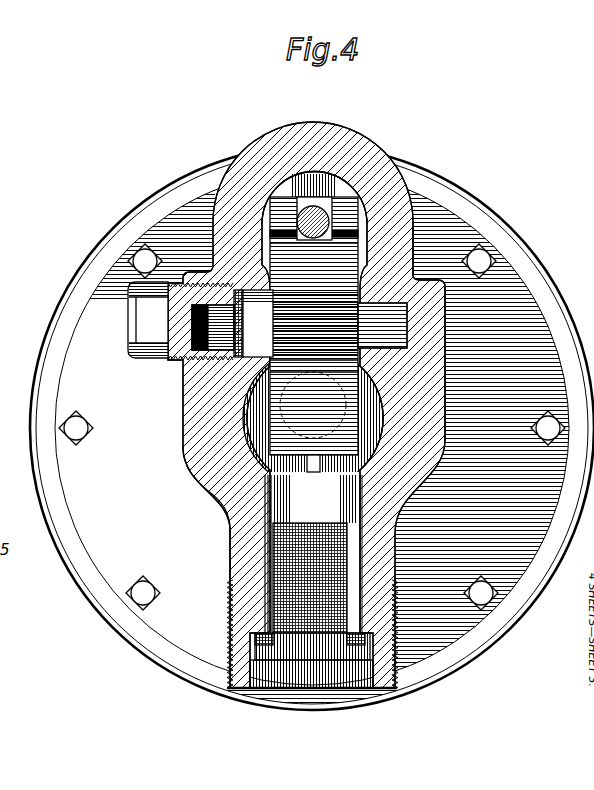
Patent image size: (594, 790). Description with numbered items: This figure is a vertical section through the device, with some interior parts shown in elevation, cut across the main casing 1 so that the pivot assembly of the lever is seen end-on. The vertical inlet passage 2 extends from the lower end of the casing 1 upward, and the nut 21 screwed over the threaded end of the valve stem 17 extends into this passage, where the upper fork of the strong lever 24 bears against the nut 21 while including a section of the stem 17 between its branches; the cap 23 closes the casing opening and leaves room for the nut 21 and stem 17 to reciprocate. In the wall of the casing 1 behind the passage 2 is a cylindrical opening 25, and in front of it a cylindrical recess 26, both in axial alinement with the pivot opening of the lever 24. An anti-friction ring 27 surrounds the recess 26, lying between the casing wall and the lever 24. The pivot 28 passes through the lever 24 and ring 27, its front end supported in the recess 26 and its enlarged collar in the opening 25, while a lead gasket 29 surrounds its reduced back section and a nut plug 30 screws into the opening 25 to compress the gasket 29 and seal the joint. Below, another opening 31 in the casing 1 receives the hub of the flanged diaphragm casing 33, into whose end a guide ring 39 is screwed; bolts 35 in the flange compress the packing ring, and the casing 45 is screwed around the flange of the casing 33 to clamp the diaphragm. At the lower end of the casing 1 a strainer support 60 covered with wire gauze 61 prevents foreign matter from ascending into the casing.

The main casing 1 is at (306, 134).
The vertical inlet passage 2 is at (317, 554).
The valve stem 17 is at (314, 206).
The nut 21 is at (354, 196).
The cap 23 is at (346, 190).
The lever 24 is at (272, 218).
The cylindrical opening 25 is at (190, 376).
The cylindrical recess 26 is at (407, 310).
The anti-friction ring 27 is at (414, 249).
The pivot 28 is at (445, 298).
The gasket 29 is at (200, 442).
The nut plug 30 is at (154, 352).
The opening 31 is at (210, 502).
The flanged diaphragm casing 33 is at (520, 565).
The bolts 35 is at (140, 588).
The guide ring 39 is at (232, 528).
The casing 45 is at (561, 309).
The strainer support 60 is at (356, 652).
The wire gauze 61 is at (272, 608).